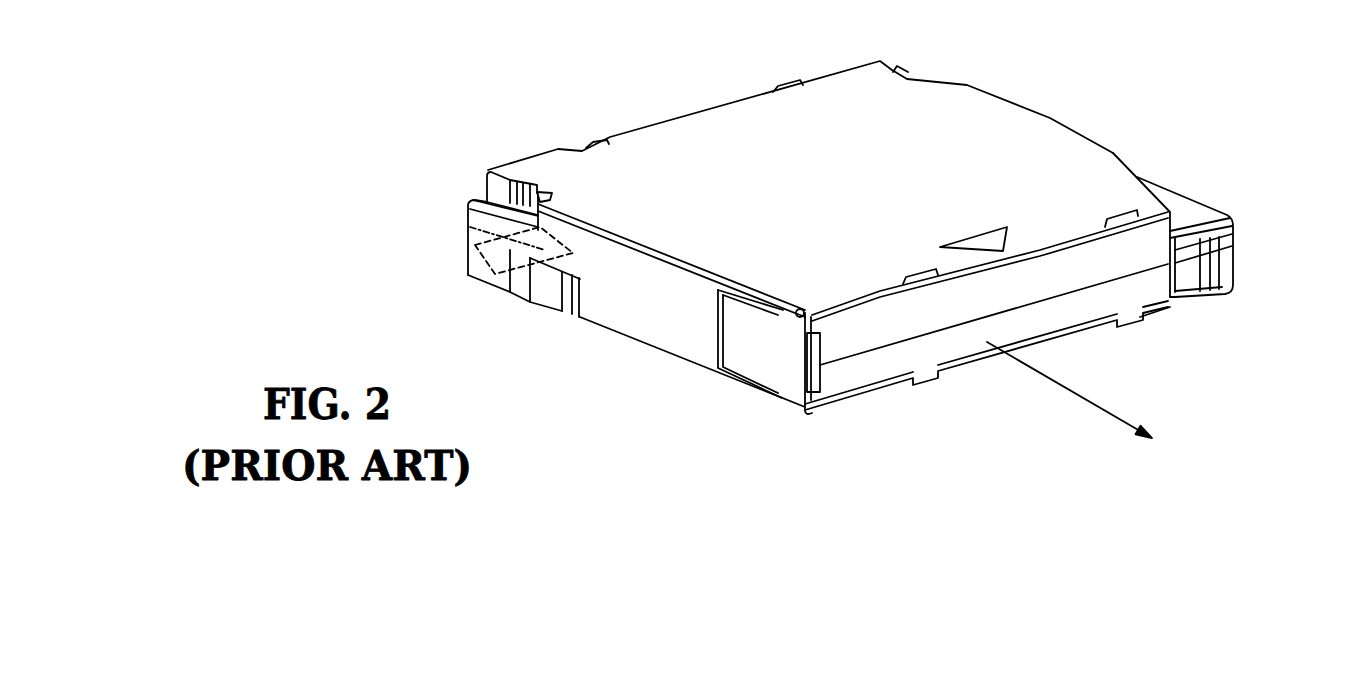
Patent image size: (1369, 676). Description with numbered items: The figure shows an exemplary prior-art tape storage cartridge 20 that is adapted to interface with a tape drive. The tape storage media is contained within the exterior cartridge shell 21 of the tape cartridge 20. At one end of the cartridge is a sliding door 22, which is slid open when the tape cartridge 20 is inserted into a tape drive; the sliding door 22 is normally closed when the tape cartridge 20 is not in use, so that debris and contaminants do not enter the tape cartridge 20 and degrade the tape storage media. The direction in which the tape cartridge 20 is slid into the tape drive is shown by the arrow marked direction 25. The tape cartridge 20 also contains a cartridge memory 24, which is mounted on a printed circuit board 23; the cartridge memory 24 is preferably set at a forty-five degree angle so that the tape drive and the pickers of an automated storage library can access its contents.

The tape storage cartridge 20 is at (1125, 110).
The exterior cartridge shell 21 is at (732, 100).
The sliding door 22 is at (757, 345).
The printed circuit board 23 is at (493, 267).
The cartridge memory 24 is at (538, 240).
The direction 25 is at (1073, 387).